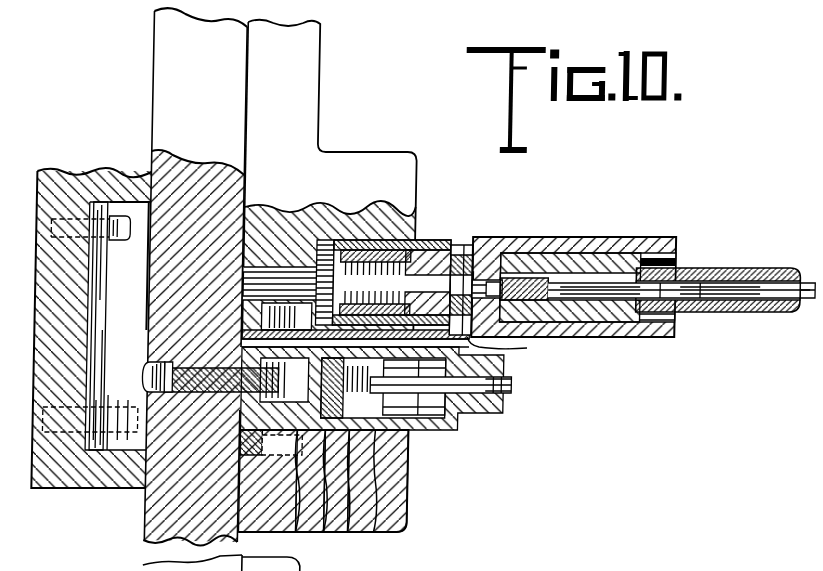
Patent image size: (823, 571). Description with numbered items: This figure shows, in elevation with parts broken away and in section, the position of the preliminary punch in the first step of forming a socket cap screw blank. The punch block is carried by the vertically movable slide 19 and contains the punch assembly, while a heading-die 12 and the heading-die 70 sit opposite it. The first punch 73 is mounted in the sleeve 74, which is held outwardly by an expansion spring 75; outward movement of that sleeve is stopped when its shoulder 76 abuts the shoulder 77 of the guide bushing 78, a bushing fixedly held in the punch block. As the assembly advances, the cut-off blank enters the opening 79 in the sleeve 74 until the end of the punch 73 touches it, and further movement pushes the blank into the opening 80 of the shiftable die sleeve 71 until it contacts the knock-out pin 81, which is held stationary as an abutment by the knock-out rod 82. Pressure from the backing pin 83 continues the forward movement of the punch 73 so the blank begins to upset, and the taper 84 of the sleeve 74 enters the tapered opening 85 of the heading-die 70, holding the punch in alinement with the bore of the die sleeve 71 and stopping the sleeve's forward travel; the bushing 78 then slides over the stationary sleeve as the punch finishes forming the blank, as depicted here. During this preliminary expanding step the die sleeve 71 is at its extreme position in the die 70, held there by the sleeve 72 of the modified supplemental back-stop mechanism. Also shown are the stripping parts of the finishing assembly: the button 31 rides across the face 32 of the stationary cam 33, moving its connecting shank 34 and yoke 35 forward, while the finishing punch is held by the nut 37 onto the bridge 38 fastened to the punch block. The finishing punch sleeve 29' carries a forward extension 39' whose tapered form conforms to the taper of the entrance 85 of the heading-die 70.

The vertically movable slide 19 is at (162, 118).
The heading-die 12 is at (304, 90).
The button 31 is at (147, 378).
The face 32 is at (147, 365).
The stationary cam 33 is at (103, 290).
The connecting shank 34 is at (300, 530).
The yoke 35 is at (330, 530).
The nut 37 is at (378, 530).
The bridge 38 is at (352, 530).
The finishing punch sleeve 29' is at (372, 397).
The forward extension 39' is at (464, 399).
The heading-die 70 is at (512, 240).
The shiftable sleeve 71 is at (526, 255).
The sleeve 72 is at (738, 270).
The first punch 73 is at (432, 245).
The sleeve 74 is at (463, 255).
The expansion spring 75 is at (362, 255).
The shoulder 76 is at (418, 252).
The shoulder 77 is at (457, 270).
The guide bushing 78 is at (326, 240).
The opening 79 is at (508, 346).
The opening 80 is at (540, 280).
The knock-out pin 81 is at (607, 285).
The knock-out rod 82 is at (760, 302).
The backing pin 83 is at (355, 262).
The taper 84 is at (480, 210).
The tapered opening 85 is at (488, 282).